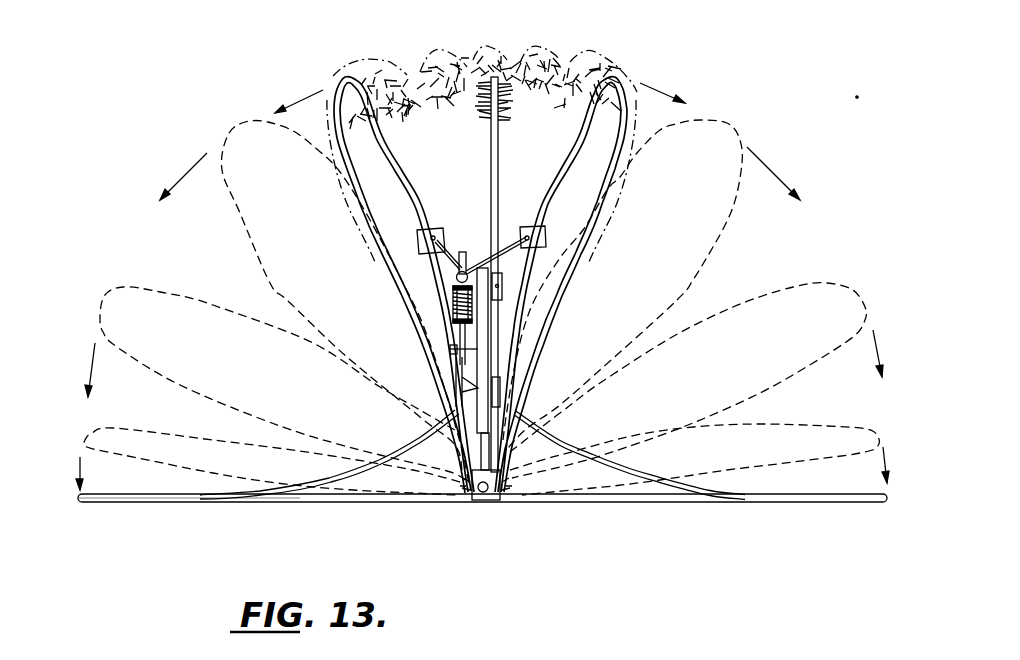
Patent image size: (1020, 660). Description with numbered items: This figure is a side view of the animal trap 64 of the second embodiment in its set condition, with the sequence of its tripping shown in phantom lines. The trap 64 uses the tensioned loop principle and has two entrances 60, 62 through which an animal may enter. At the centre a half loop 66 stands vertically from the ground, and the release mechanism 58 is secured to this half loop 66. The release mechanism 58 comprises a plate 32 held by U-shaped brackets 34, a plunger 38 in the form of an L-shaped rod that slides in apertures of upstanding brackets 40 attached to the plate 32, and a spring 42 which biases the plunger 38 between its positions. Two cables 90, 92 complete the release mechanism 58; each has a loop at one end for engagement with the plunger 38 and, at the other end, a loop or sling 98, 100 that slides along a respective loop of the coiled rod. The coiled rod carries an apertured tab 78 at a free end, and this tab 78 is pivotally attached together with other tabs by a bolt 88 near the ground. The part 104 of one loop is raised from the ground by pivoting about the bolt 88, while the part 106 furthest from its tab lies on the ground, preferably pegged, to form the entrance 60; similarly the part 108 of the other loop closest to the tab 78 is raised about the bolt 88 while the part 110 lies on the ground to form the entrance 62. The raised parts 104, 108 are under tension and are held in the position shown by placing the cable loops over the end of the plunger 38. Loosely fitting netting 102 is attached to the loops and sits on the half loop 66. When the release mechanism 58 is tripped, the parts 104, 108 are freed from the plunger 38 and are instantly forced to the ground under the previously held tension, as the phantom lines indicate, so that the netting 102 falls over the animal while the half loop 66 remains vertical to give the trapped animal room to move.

The plate 32 is at (490, 363).
The U-shaped brackets 34 is at (503, 296).
The plunger 38 is at (456, 368).
The upstanding brackets 40 is at (457, 349).
The spring 42 is at (453, 308).
The release mechanism 58 is at (427, 297).
The entrance 60 is at (197, 247).
The entrance 62 is at (800, 267).
The trap 64 is at (380, 57).
The half loop 66 is at (493, 163).
The apertured tab 78 is at (487, 500).
The bolt 88 is at (477, 500).
The cable 90 is at (460, 250).
The cable 92 is at (505, 255).
The loop or sling 98 is at (433, 228).
The loop or sling 100 is at (543, 242).
The netting 102 is at (601, 55).
The part of loop 104 is at (343, 150).
The part of loop 106 is at (853, 497).
The part of loop 108 is at (733, 307).
The part of loop 110 is at (110, 583).